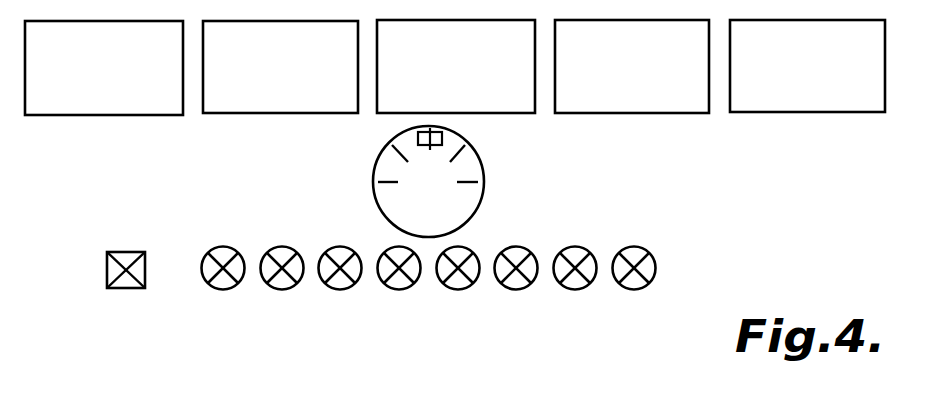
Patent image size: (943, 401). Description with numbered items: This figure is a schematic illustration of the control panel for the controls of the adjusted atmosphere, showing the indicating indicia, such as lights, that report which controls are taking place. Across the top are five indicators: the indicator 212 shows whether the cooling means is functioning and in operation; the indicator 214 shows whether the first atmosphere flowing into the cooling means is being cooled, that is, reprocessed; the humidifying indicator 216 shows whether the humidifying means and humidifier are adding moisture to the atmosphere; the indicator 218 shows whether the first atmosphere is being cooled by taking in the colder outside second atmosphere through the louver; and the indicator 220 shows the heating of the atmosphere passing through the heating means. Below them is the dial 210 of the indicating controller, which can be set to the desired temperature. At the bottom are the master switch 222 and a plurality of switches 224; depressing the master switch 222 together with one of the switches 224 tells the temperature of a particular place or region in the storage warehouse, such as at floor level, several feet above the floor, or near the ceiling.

The dial 210 is at (485, 173).
The indicator 212 is at (71, 78).
The indicator 214 is at (250, 77).
The humidifying indicator 216 is at (424, 77).
The indicator 218 is at (600, 77).
The indicator 220 is at (776, 76).
The master switch 222 is at (126, 289).
The switches 224 is at (635, 292).